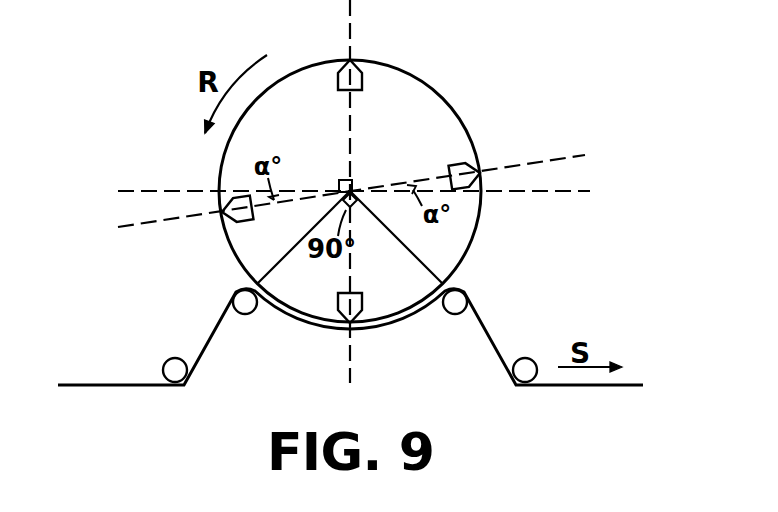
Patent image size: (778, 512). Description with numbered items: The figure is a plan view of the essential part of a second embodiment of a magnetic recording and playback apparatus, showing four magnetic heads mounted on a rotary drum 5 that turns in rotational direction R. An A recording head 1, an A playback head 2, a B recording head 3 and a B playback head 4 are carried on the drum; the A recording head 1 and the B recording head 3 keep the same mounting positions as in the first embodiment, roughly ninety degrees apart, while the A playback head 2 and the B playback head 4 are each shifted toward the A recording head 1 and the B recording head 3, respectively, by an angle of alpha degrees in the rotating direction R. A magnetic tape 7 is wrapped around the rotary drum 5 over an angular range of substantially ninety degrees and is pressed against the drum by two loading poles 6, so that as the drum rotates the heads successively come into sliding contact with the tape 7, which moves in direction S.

The A channel recording head 1 is at (362, 305).
The A channel playback head 2 is at (458, 175).
The B channel recording head 3 is at (343, 81).
The B channel playback head 4 is at (248, 223).
The rotary drum 5 is at (402, 92).
The loading poles 6 is at (245, 306).
The magnetic tape 7 is at (122, 384).